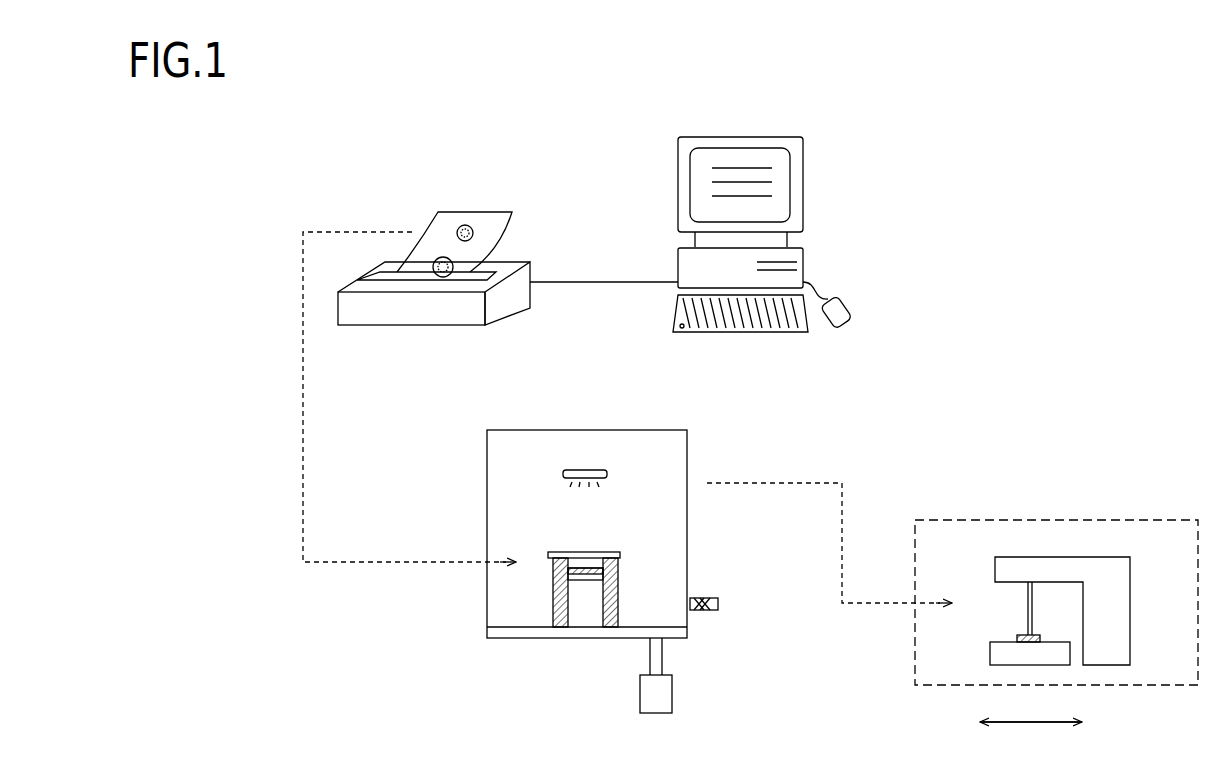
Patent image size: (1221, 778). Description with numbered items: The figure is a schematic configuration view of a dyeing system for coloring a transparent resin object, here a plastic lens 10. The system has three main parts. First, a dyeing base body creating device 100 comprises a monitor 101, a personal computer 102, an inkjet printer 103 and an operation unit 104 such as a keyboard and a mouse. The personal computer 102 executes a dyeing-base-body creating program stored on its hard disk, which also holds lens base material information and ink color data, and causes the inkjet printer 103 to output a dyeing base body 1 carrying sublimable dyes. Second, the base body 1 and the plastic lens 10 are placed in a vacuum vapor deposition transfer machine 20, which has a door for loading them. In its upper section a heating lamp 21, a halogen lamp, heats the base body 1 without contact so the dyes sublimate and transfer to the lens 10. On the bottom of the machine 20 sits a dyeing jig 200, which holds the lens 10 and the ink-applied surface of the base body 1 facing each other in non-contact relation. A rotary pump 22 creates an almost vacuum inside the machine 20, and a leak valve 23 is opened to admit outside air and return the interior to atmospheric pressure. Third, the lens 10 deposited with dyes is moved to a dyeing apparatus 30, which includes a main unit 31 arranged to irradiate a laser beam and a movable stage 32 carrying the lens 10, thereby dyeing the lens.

The dyeing base body 1 is at (462, 215).
The plastic lens 10 is at (590, 550).
The vacuum vapor deposition transfer machine 20 is at (687, 442).
The heating lamp 21 is at (590, 468).
The rotary pump 22 is at (660, 692).
The leak valve 23 is at (704, 598).
The dyeing jig 200 is at (634, 583).
The dyeing apparatus 30 is at (1133, 518).
The main unit 31 is at (1120, 577).
The movable stage 32 is at (1052, 658).
The dyeing base body creating device 100 is at (842, 131).
The monitor 101 is at (795, 172).
The personal computer 102 is at (788, 248).
The inkjet printer 103 is at (517, 304).
The operation unit 104 is at (773, 333).